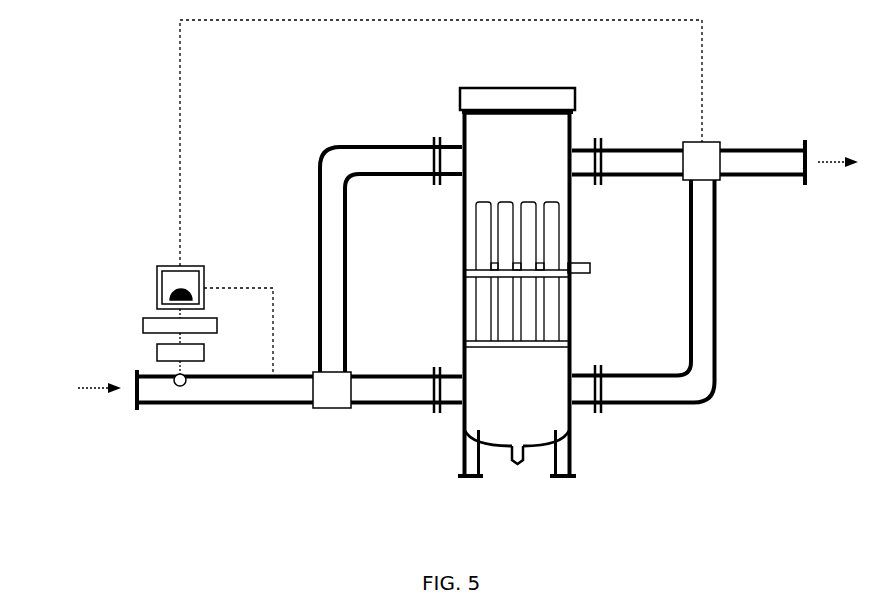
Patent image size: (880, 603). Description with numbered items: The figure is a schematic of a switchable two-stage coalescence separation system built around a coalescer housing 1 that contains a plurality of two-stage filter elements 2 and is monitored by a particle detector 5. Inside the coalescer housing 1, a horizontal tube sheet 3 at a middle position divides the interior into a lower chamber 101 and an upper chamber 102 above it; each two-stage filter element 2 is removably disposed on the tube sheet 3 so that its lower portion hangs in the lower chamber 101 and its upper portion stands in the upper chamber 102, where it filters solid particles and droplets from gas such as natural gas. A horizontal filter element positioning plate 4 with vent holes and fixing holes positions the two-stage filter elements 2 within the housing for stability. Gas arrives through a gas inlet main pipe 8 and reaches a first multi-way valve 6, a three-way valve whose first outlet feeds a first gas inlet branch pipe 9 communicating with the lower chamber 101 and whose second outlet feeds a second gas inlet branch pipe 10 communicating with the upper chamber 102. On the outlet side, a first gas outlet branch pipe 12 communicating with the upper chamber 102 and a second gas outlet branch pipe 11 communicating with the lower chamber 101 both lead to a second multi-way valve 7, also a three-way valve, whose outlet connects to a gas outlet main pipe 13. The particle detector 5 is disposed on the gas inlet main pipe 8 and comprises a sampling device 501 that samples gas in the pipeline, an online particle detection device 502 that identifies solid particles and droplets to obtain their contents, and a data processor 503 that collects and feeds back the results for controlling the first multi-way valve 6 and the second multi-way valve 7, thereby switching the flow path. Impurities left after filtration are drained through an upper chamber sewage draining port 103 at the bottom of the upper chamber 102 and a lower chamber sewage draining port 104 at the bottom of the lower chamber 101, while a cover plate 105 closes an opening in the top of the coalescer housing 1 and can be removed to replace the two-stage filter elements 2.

The coalescer housing 1 is at (463, 133).
The two-stage filter element 2 is at (558, 300).
The tube sheet 3 is at (466, 268).
The filter element positioning plate 4 is at (465, 342).
The particle detector 5 is at (371, 203).
The first multi-way valve 6 is at (330, 408).
The second multi-way valve 7 is at (717, 145).
The gas inlet main pipe 8 is at (230, 405).
The first gas inlet branch pipe 9 is at (392, 405).
The second gas inlet branch pipe 10 is at (317, 198).
The second gas outlet branch pipe 11 is at (718, 285).
The first gas outlet branch pipe 12 is at (633, 146).
The gas outlet main pipe 13 is at (767, 146).
The lower chamber 101 is at (523, 370).
The upper chamber 102 is at (519, 142).
The upper chamber sewage draining port 103 is at (590, 265).
The lower chamber sewage draining port 104 is at (519, 464).
The cover plate 105 is at (461, 93).
The sampling device 501 is at (172, 377).
The online particle detection device 502 is at (157, 352).
The data processor 503 is at (162, 265).